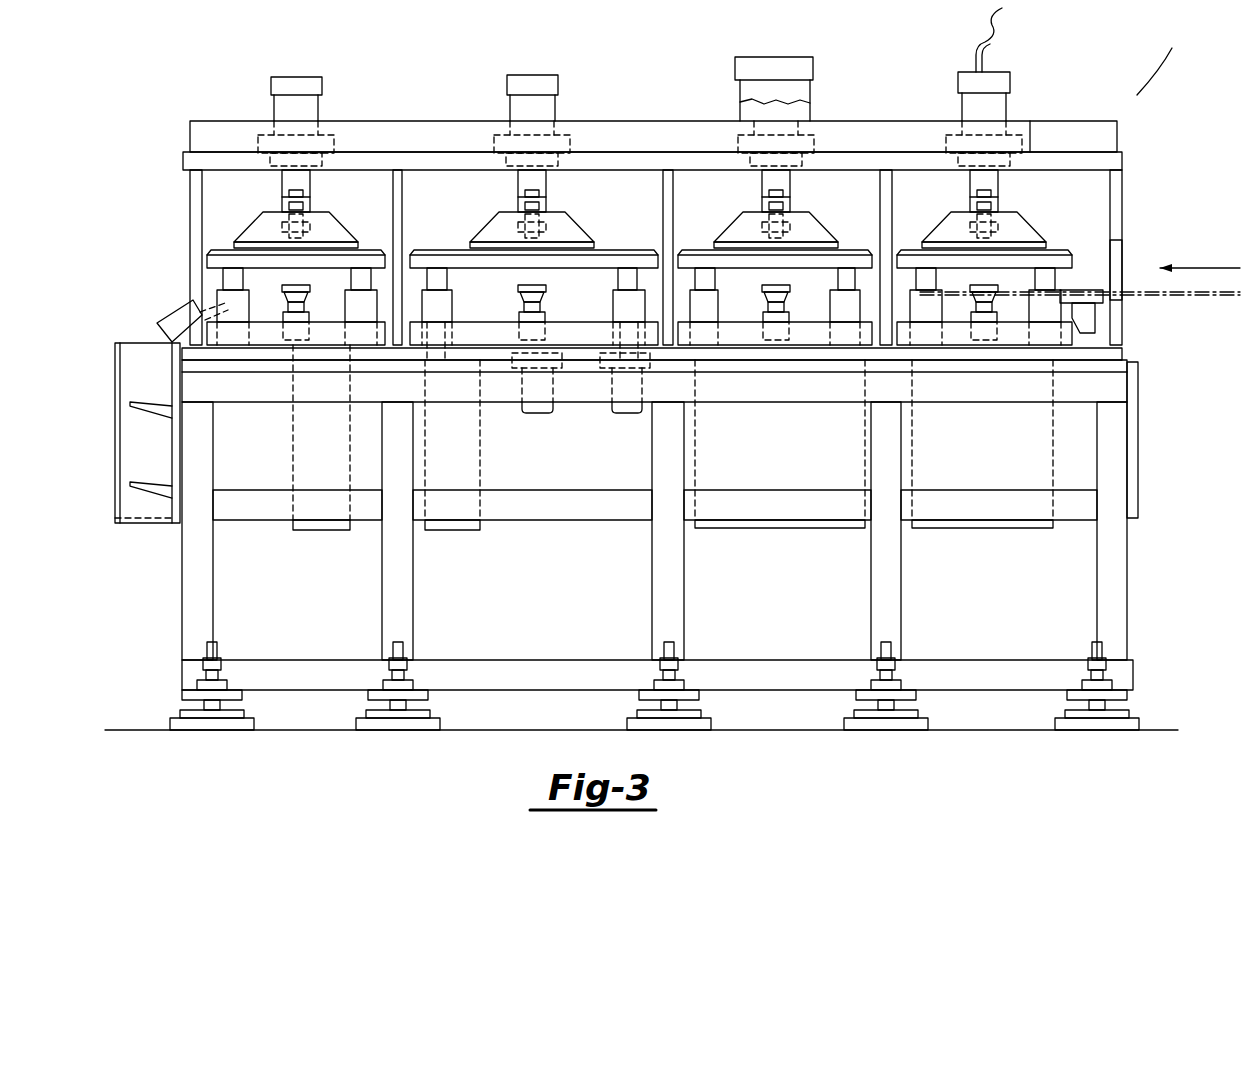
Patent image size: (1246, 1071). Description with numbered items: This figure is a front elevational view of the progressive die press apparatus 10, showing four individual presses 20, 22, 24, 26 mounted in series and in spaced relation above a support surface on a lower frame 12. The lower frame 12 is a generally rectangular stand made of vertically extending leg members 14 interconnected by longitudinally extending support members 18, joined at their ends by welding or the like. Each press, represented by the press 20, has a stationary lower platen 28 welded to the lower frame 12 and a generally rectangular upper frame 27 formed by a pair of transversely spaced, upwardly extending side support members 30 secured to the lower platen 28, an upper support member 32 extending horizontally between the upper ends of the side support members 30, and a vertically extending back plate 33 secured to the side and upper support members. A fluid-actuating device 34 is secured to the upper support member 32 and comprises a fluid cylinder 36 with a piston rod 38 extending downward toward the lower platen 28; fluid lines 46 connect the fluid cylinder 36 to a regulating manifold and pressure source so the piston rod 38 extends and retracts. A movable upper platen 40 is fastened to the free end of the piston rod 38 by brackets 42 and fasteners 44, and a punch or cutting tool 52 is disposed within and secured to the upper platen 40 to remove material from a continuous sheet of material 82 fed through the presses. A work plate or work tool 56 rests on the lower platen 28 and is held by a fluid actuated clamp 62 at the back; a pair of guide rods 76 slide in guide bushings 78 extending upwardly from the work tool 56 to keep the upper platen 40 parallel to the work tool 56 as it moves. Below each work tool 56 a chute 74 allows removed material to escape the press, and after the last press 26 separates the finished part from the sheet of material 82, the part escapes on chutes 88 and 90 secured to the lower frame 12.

The progressive die press apparatus 10 is at (1165, 62).
The lower frame 12 is at (1132, 618).
The leg members 14 is at (205, 585).
The support members 18 is at (280, 510).
The press 20 is at (1126, 188).
The press 22 is at (862, 118).
The press 24 is at (598, 118).
The press 26 is at (376, 118).
The upper frame 27 is at (188, 215).
The lower platen 28 is at (1100, 354).
The side support members 30 is at (890, 232).
The upper support member 32 is at (1046, 158).
The back plate 33 is at (723, 199).
The fluid-actuating device 34 is at (1014, 95).
The fluid cylinder 36 is at (962, 106).
The piston rod 38 is at (998, 176).
The upper platen 40 is at (1050, 258).
The brackets 42 is at (1000, 198).
The fasteners 44 is at (984, 200).
The fluid lines 46 is at (1003, 36).
The cutting tool 52 is at (1022, 226).
The work tool 56 is at (957, 346).
The fluid actuated clamp 62 is at (1000, 292).
The chute 74 is at (318, 448).
The guide rods 76 is at (930, 278).
The guide bushings 78 is at (925, 305).
The sheet of material 82 is at (1172, 294).
The chute 88 is at (178, 312).
The chute 90 is at (113, 368).